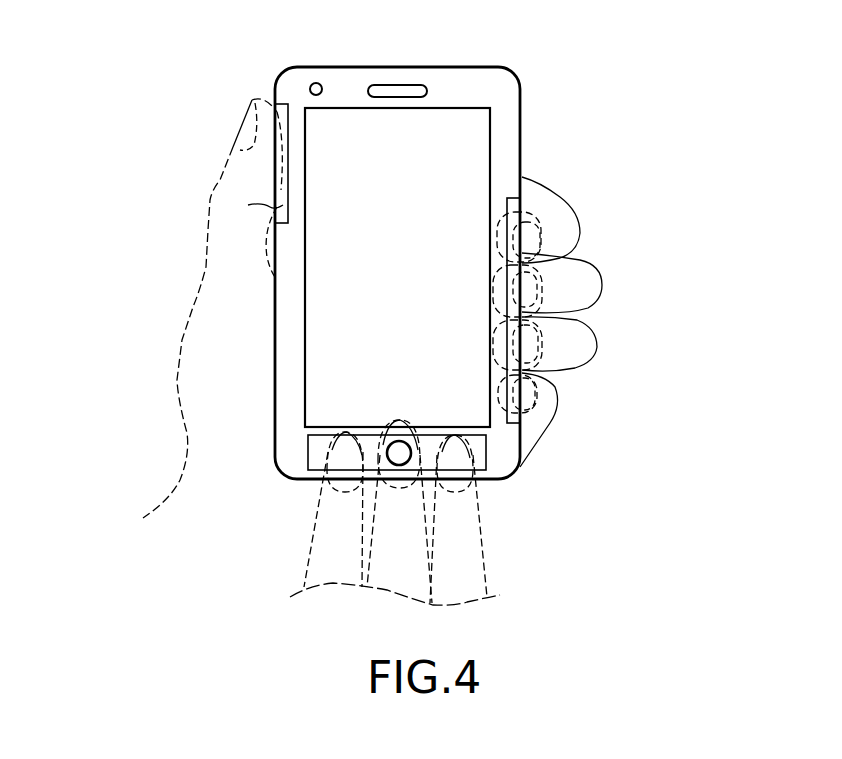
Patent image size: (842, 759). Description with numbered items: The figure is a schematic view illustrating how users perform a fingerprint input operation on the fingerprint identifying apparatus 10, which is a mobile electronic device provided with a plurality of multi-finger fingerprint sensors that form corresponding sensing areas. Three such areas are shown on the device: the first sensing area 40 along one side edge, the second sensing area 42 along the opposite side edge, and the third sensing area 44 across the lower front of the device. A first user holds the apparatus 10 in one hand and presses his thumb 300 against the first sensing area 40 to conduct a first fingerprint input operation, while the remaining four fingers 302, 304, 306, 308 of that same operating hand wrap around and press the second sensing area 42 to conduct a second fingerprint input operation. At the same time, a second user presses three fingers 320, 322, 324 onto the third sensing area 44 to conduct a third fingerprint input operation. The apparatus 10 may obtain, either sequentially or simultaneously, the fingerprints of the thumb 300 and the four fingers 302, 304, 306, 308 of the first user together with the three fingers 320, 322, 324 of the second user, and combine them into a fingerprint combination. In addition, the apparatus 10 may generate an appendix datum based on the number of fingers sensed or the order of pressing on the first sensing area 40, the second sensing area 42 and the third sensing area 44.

The fingerprint identifying apparatus 10 is at (475, 85).
The first sensing area 40 is at (283, 205).
The second sensing area 42 is at (508, 200).
The third sensing area 44 is at (480, 448).
The thumb 300 is at (210, 333).
The remaining finger 302 is at (563, 223).
The remaining finger 304 is at (580, 285).
The remaining finger 306 is at (583, 345).
The remaining finger 308 is at (545, 415).
The finger of second user 320 is at (330, 522).
The finger of second user 322 is at (398, 557).
The finger of second user 324 is at (457, 522).